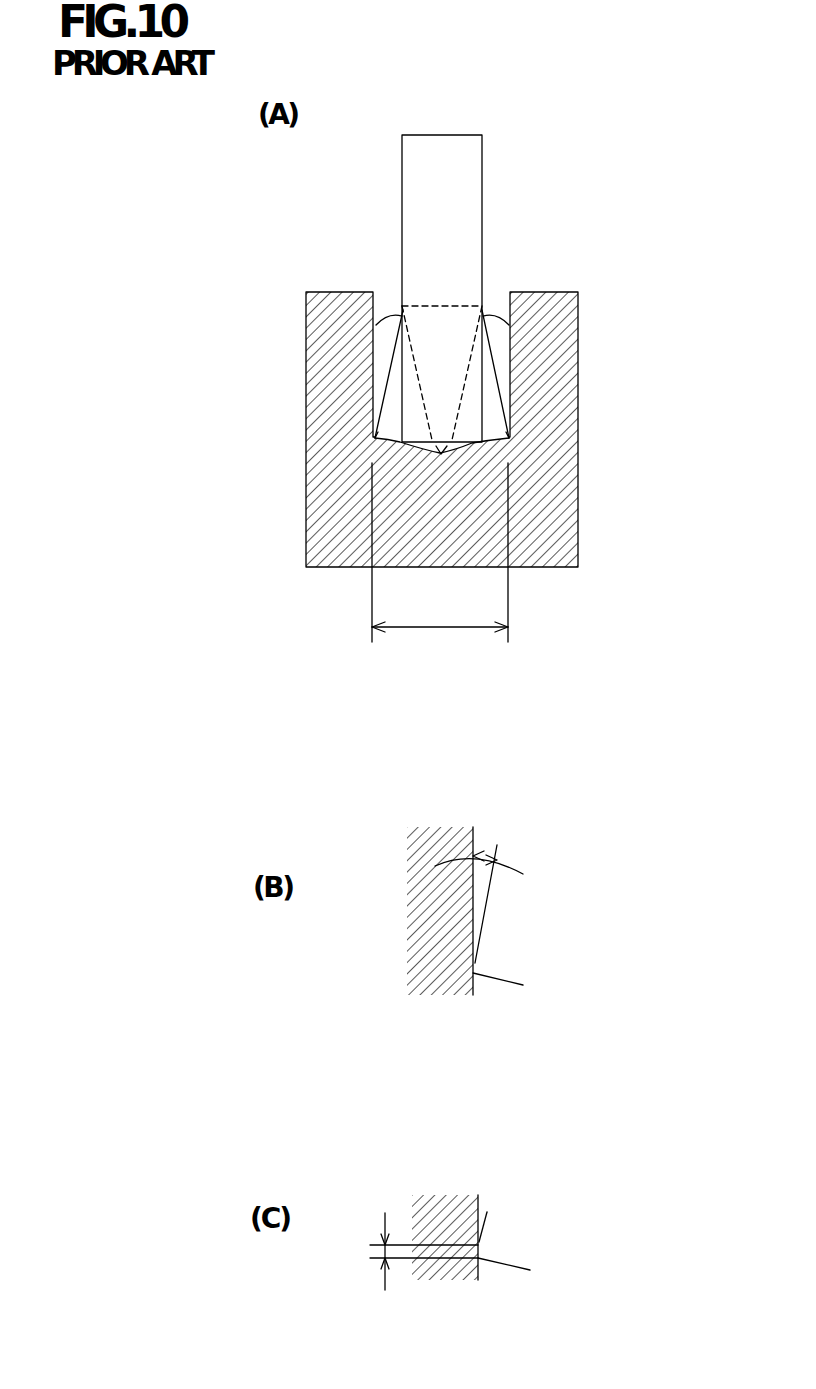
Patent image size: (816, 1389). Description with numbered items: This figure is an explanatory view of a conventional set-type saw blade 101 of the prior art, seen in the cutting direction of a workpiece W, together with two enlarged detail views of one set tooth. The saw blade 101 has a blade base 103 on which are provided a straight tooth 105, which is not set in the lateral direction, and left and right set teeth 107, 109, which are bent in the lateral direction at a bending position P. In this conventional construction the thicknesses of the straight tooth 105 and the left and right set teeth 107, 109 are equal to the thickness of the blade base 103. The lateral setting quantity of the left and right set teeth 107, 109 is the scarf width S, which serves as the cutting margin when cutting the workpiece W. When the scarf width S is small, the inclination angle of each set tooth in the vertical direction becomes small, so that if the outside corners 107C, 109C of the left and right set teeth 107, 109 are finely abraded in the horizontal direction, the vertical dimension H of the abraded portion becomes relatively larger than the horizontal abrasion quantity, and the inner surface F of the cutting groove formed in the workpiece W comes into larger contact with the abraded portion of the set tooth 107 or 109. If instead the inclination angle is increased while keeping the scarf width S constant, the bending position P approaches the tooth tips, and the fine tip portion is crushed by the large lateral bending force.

The saw blade 101 is at (537, 171).
The blade base 103 is at (418, 170).
The straight tooth 105 is at (442, 453).
The left set tooth 107 is at (388, 402).
The outside corner of left set tooth 107C is at (377, 433).
The right set tooth 109 is at (497, 398).
The outside corner of right set tooth 109C is at (512, 430).
The workpiece W is at (306, 325).
The inner surface of cutting groove F is at (378, 322).
The bending position P is at (452, 302).
The scarf width S is at (440, 569).
The vertical dimension at abraded portion H is at (366, 1251).